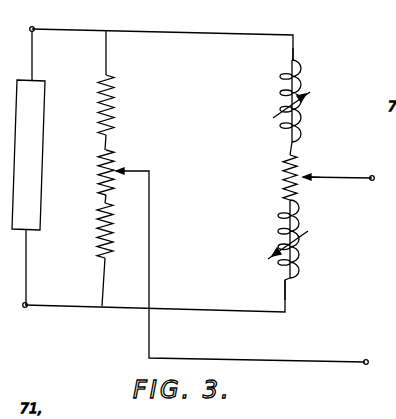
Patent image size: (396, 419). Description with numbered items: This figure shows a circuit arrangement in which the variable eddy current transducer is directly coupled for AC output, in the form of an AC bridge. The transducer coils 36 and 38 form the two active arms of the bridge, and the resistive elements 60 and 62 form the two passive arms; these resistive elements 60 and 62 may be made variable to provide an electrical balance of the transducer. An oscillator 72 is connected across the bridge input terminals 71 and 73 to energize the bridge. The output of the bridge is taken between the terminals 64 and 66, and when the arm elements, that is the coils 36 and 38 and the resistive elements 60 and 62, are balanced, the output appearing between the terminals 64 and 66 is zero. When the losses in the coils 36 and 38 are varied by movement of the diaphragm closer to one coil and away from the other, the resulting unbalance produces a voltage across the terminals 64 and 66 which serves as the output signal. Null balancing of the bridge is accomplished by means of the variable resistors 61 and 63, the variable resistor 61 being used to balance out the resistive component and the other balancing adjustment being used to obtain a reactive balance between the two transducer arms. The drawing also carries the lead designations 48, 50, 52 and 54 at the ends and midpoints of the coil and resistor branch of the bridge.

The bridge input terminal 71 is at (33, 26).
The oscillator 72 is at (42, 197).
The bridge input terminal 73 is at (24, 311).
The resistive element 60 is at (113, 103).
The variable resistor 61 is at (110, 160).
The resistive element 62 is at (111, 237).
The coil end lead 48 is at (296, 57).
The transducer coil 36 is at (305, 116).
The resistor section 50 is at (293, 155).
The resistor section 52 is at (293, 197).
The variable resistor 63 is at (290, 177).
The output terminal 64 is at (372, 181).
The transducer coil 38 is at (297, 256).
The coil end lead 54 is at (287, 288).
The output terminal 66 is at (366, 359).